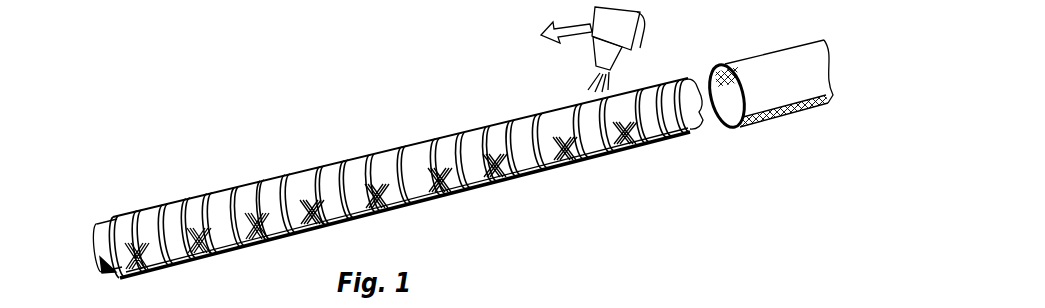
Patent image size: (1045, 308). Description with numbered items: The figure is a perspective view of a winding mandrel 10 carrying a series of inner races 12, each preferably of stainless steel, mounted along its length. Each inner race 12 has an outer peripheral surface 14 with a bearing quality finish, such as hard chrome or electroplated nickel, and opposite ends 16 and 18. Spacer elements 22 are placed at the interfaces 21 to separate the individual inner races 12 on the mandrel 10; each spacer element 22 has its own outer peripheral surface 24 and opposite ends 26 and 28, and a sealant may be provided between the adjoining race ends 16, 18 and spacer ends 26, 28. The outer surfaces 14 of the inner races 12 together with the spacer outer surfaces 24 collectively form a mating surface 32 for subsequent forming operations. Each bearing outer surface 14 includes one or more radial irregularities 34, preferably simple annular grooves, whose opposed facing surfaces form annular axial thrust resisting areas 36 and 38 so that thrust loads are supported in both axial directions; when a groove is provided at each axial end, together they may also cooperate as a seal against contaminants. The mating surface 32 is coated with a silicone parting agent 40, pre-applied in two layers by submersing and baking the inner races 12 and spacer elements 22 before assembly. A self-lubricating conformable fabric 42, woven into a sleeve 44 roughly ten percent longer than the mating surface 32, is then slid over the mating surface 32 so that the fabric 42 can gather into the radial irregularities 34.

The mandrel 10 is at (104, 247).
The inner race 12 is at (447, 140).
The outer peripheral surface 14 is at (265, 183).
The end 16 is at (378, 212).
The end 18 is at (460, 190).
The interface 21 is at (183, 260).
The spacer element 22 is at (360, 160).
The outer peripheral surface 24 is at (238, 191).
The end 26 is at (283, 240).
The end 28 is at (335, 225).
The mating surface 32 is at (513, 123).
The radial irregularity 34 is at (418, 203).
The annular axial thrust resisting area 36 is at (483, 187).
The annular axial thrust resisting area 38 is at (461, 138).
The parting agent 40 is at (594, 70).
The fabric 42 is at (722, 120).
The sleeve 44 is at (783, 120).